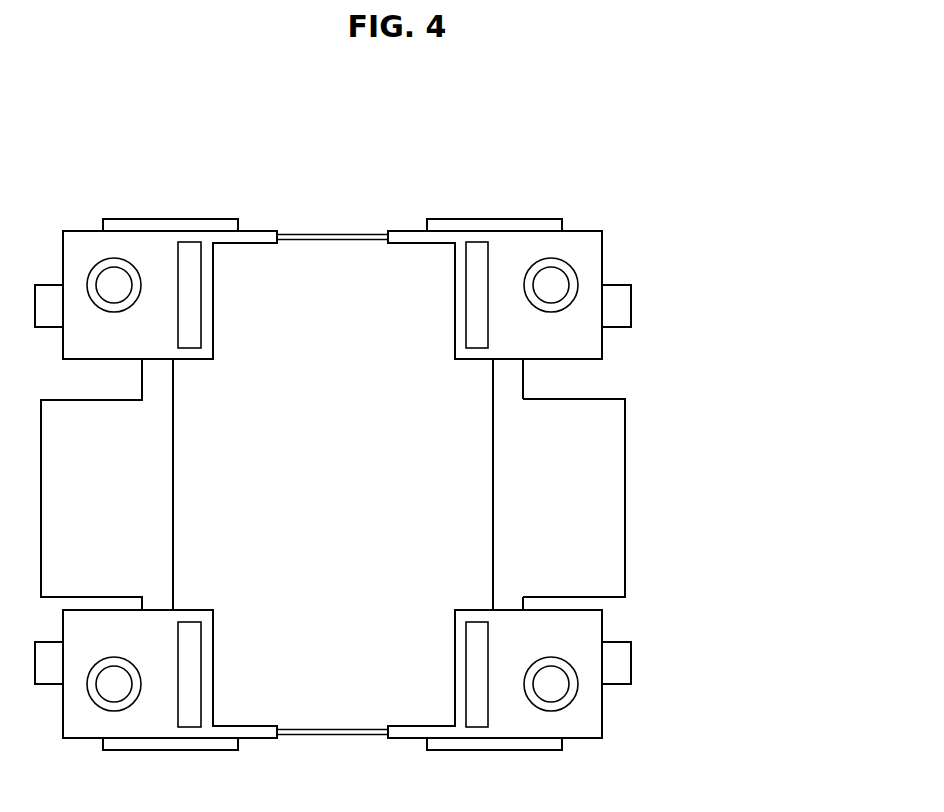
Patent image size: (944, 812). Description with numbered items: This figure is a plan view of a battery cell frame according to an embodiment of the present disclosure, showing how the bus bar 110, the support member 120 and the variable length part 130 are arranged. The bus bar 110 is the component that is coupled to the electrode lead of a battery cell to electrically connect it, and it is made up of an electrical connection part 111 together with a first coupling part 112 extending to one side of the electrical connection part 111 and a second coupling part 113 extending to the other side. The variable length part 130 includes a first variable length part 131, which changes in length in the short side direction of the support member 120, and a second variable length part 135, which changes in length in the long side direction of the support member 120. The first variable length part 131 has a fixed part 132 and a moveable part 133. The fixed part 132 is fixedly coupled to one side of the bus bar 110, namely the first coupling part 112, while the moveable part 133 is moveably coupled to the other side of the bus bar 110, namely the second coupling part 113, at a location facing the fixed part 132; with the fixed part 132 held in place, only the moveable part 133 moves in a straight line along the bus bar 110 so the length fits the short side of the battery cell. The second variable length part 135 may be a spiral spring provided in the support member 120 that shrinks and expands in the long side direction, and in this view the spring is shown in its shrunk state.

The bus bar 110 is at (698, 429).
The electrical connection part 111 is at (610, 468).
The first coupling part 112 is at (513, 604).
The second coupling part 113 is at (518, 382).
The support member 120 is at (161, 176).
The variable length part 130 is at (650, 136).
The first variable length part 131 is at (635, 195).
The fixed part 132 is at (587, 723).
The moveable part 133 is at (587, 248).
The second variable length part 135 is at (307, 234).